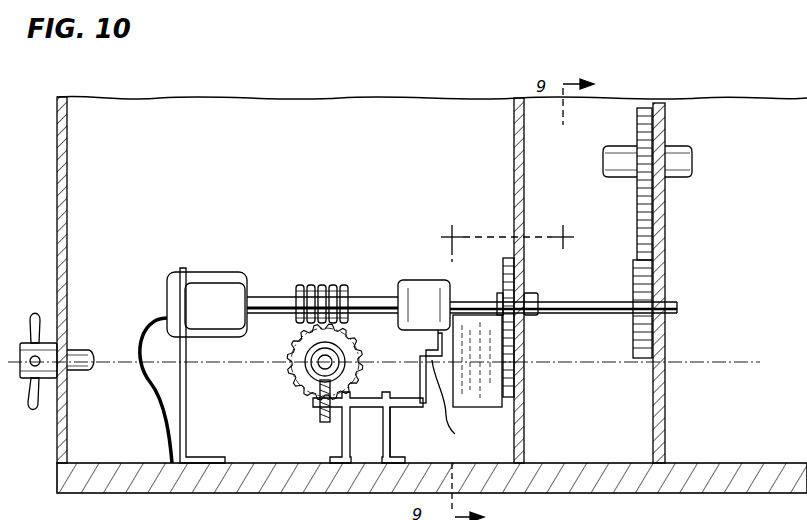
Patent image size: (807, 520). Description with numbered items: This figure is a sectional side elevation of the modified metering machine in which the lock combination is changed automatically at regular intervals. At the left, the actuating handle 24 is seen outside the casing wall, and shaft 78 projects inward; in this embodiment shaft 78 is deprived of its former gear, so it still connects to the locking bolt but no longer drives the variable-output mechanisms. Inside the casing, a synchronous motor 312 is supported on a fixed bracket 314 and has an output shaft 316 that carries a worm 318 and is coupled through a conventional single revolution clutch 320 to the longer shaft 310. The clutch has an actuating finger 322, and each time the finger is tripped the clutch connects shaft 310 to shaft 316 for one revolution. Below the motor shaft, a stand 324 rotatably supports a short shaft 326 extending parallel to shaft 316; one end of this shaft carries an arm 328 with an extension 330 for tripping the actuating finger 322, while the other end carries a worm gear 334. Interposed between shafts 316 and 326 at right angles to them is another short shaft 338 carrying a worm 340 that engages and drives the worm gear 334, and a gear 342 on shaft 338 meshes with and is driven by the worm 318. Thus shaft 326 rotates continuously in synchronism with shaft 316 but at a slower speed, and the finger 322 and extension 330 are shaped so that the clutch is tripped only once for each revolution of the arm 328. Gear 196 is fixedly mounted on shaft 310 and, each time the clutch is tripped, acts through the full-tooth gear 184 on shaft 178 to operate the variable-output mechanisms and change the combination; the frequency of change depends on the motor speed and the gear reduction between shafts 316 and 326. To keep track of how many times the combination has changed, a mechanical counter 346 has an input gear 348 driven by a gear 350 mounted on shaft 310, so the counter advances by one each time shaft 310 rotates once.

The actuating handle 24 is at (35, 313).
The shaft 78 is at (82, 352).
The shaft 178 is at (690, 152).
The full-tooth gear 184 is at (640, 220).
The gear 196 is at (633, 327).
The shaft 310 is at (592, 302).
The synchronous motor 312 is at (218, 272).
The fixed bracket 314 is at (186, 405).
The output shaft 316 is at (273, 297).
The worm 318 is at (343, 288).
The single revolution clutch 320 is at (434, 282).
The actuating finger 322 is at (430, 350).
The stand 324 is at (342, 450).
The short shaft 326 is at (398, 408).
The arm 328 is at (420, 390).
The extension 330 is at (454, 399).
The worm gear 334 is at (320, 418).
The short shaft 338 is at (318, 361).
The worm 340 is at (310, 376).
The gear 342 is at (300, 348).
The mechanical counter 346 is at (490, 407).
The gear 348 is at (506, 403).
The gear 350 is at (508, 258).